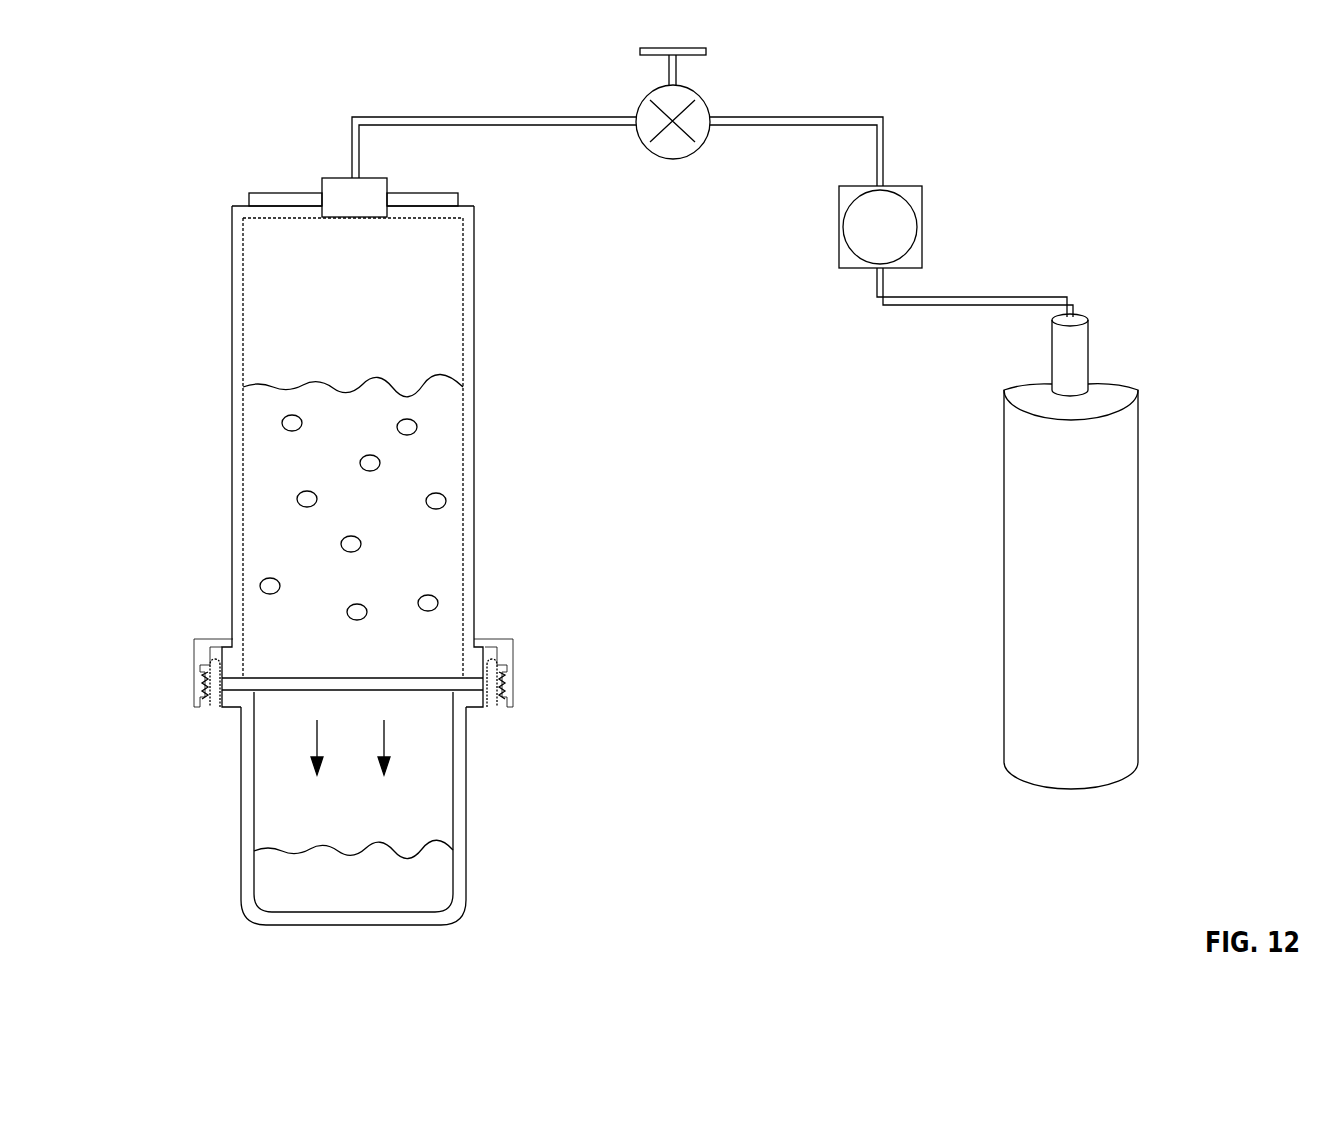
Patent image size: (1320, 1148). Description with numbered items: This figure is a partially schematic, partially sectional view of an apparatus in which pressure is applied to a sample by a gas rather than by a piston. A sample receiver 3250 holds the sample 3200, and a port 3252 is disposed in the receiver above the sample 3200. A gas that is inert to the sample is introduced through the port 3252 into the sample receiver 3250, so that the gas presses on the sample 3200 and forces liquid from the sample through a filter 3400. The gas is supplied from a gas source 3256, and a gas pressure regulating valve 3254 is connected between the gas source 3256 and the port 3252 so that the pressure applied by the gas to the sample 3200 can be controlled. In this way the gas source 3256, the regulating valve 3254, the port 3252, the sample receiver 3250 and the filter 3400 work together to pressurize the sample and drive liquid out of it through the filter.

The sample 3200 is at (290, 530).
The sample receiver 3250 is at (474, 345).
The port 3252 is at (337, 218).
The gas pressure regulating valve 3254 is at (923, 223).
The gas source 3256 is at (1122, 368).
The filter 3400 is at (417, 690).